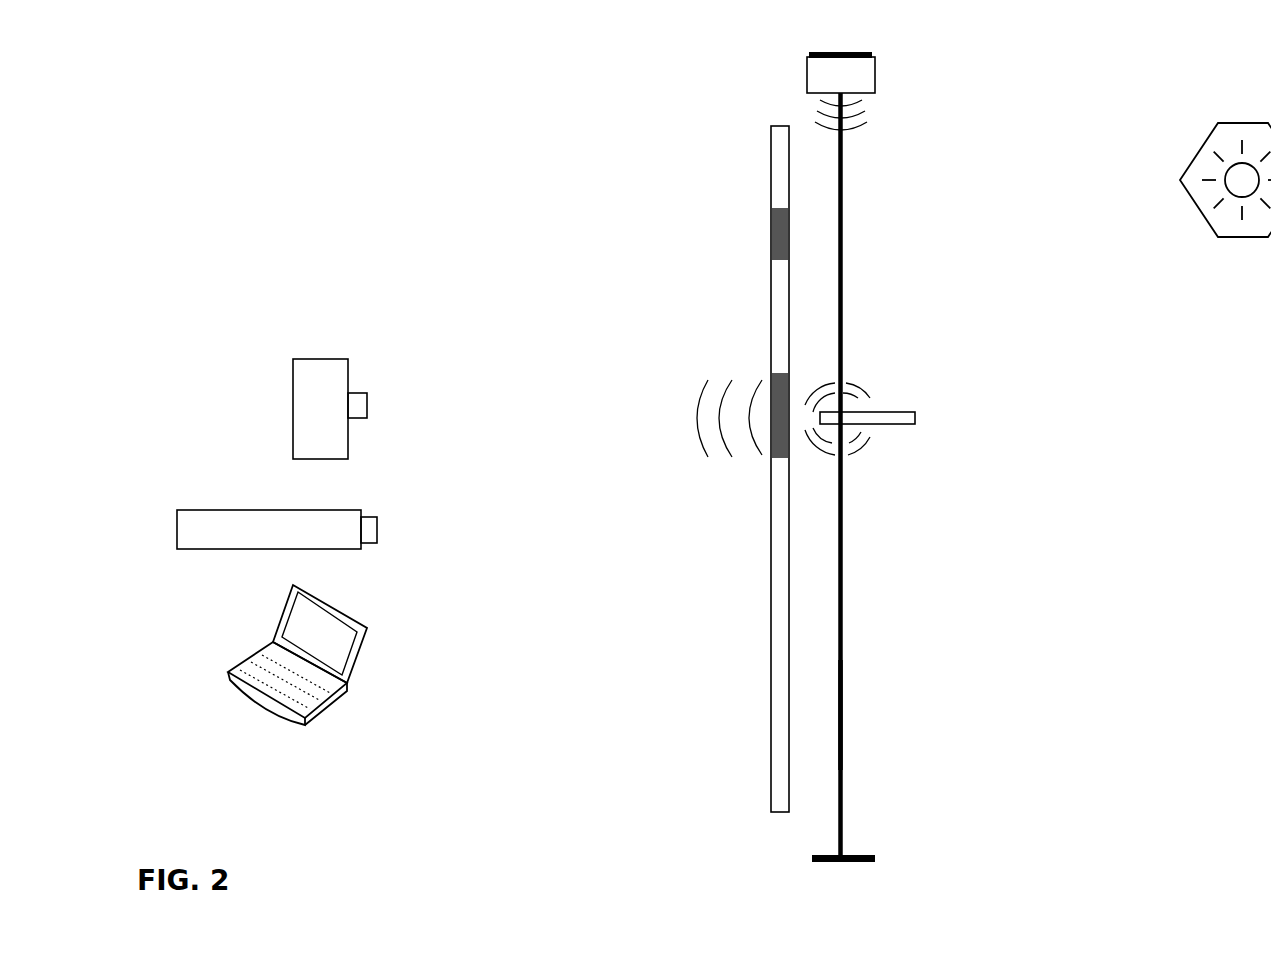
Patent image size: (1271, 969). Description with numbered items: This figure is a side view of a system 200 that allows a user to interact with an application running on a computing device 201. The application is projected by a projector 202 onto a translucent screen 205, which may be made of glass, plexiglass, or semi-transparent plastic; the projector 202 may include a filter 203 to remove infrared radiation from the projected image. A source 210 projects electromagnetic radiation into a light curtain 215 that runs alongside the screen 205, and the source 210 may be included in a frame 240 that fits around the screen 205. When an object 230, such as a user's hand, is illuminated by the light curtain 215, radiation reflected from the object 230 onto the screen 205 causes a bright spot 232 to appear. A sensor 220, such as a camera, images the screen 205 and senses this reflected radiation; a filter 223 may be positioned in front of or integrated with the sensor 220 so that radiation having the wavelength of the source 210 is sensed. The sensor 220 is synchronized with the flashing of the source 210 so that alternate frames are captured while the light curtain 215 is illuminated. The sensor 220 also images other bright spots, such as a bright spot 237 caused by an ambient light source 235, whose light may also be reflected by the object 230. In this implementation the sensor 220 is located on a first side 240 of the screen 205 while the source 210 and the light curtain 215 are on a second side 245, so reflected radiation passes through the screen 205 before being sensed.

The system 200 is at (631, 46).
The computing device 201 is at (297, 666).
The projector 202 is at (269, 529).
The filter 203 is at (377, 527).
The screen 205 is at (783, 785).
The source 210 is at (841, 91).
The light curtain 215 is at (843, 713).
The sensor 220 is at (320, 409).
The filter 223 is at (367, 400).
The object 230 is at (915, 419).
The bright spot 232 is at (776, 388).
The ambient light source 235 is at (1193, 158).
The bright spot 237 is at (773, 238).
The frame 240 is at (872, 57).
The second side 245 is at (822, 474).